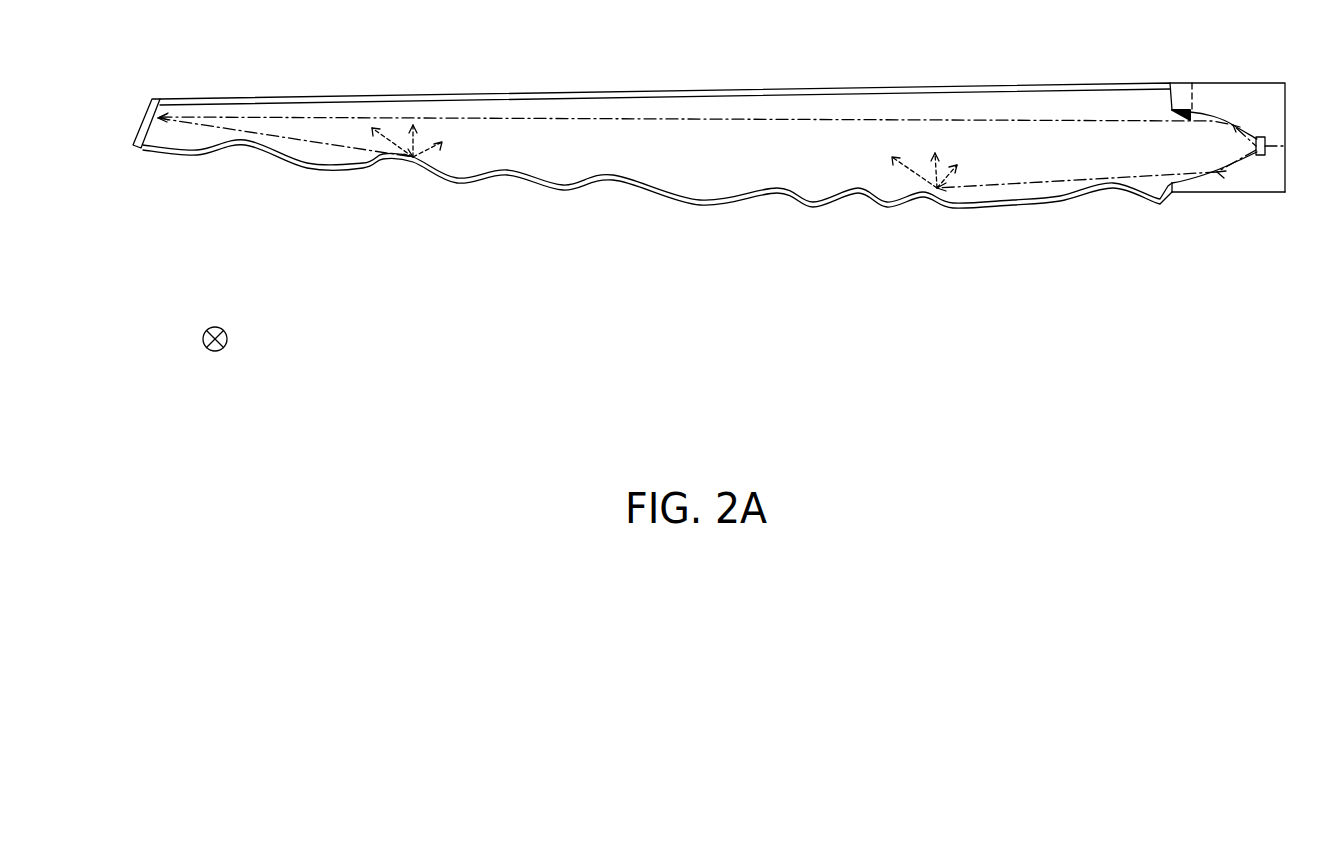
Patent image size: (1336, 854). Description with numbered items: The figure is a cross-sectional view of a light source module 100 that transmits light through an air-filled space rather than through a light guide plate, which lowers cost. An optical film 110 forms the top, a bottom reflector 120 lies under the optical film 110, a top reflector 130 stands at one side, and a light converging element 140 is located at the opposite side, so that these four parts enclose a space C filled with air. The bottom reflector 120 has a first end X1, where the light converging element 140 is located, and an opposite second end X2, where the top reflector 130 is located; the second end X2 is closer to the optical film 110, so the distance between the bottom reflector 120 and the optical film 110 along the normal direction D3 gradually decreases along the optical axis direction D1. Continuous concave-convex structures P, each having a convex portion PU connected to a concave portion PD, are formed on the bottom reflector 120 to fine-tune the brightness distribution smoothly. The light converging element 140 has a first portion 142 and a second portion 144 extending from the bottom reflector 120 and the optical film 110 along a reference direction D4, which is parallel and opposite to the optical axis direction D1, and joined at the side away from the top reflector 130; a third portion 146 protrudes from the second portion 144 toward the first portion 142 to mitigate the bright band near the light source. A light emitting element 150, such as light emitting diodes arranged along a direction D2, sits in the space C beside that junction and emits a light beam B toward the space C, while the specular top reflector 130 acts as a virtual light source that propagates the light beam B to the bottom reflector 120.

The light source module 100 is at (1132, 420).
The optical film 110 is at (830, 90).
The bottom reflector 120 is at (1008, 202).
The top reflector 130 is at (150, 118).
The light converging element 140 is at (1209, 215).
The first portion 142 is at (1255, 182).
The second portion 144 is at (1242, 102).
The third portion 146 is at (1170, 111).
The light emitting element 150 is at (1266, 143).
The space C is at (680, 112).
The light beam B is at (1045, 124).
The first end X1 is at (1172, 210).
The second end X2 is at (143, 157).
The concave portion PD is at (459, 190).
The convex portion PU is at (505, 190).
The concave-convex structures P is at (410, 283).
The optical axis direction D1 is at (203, 339).
The direction D2 is at (215, 356).
The normal direction D3 is at (215, 327).
The reference direction D4 is at (227, 339).